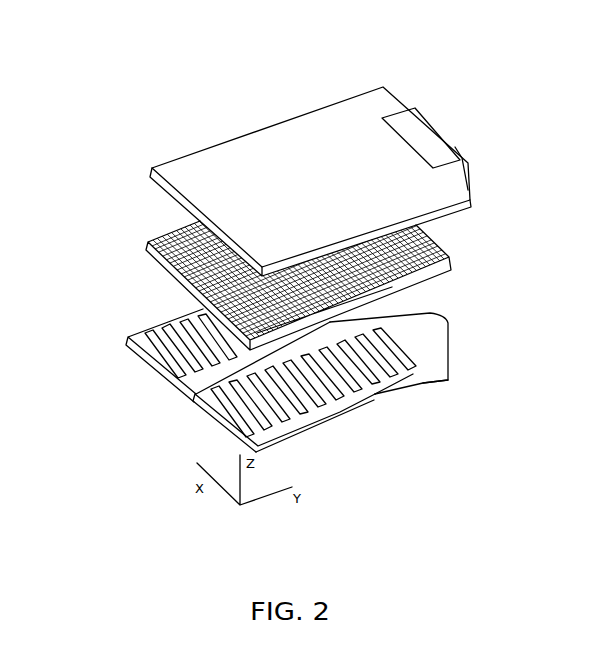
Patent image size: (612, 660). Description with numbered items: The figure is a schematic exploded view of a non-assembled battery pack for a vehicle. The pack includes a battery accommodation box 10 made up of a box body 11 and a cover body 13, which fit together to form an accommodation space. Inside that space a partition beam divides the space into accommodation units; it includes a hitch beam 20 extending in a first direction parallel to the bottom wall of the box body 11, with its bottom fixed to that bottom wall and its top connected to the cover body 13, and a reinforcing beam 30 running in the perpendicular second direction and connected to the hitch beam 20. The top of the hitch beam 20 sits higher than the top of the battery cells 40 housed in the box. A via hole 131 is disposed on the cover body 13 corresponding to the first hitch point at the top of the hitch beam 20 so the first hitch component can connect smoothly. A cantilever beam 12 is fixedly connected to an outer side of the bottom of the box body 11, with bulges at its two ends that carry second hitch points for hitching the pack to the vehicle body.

The battery accommodation box 10 is at (85, 228).
The box body 11 is at (173, 388).
The cantilever beam 12 is at (127, 336).
The cover body 13 is at (279, 155).
The via hole 131 is at (315, 142).
The hitch beam 20 is at (423, 383).
The reinforcing beam 30 is at (397, 317).
The battery cells 40 is at (440, 250).